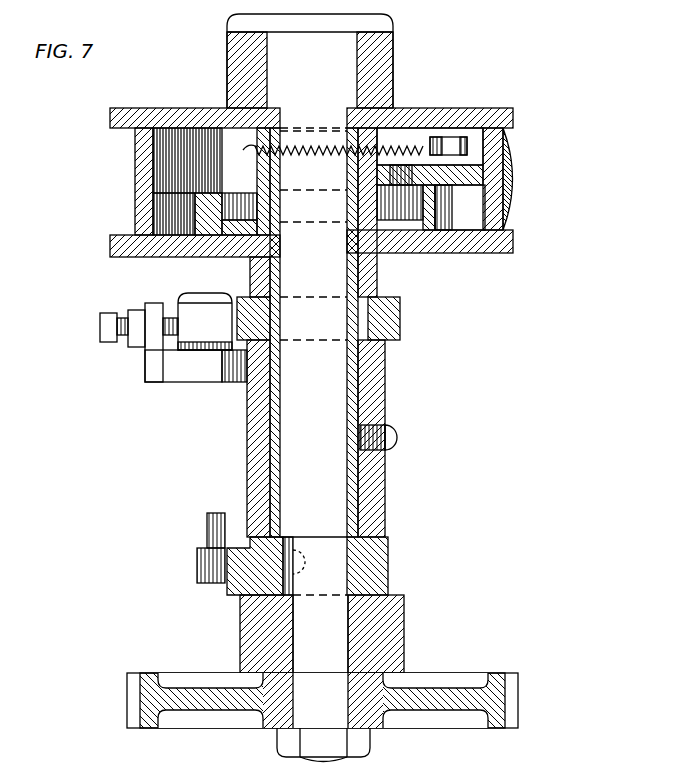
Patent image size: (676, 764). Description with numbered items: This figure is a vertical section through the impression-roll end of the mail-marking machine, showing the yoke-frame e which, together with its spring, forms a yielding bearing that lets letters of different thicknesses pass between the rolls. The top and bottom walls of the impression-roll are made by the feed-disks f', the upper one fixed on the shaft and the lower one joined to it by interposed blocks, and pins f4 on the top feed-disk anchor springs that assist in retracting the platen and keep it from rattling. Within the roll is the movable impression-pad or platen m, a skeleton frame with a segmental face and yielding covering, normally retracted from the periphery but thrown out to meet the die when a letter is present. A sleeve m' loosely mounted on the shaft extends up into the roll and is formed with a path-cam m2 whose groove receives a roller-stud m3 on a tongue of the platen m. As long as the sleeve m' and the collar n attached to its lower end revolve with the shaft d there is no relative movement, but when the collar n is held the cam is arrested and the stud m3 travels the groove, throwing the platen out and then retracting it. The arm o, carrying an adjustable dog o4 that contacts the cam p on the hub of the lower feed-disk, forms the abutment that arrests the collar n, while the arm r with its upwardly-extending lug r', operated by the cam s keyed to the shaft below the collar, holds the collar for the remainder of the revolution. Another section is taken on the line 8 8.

The yoke-frame e is at (393, 57).
The feed-disks f' is at (160, 182).
The pins f4 is at (327, 170).
The section line 8 8 is at (257, 131).
The impression-pad or platen m is at (462, 180).
The path-cam m2 is at (203, 217).
The roller-stud m3 is at (412, 218).
The sleeve m' is at (398, 332).
The cam p is at (405, 322).
The arm o is at (170, 372).
The adjustable dog o4 is at (205, 326).
The shaft d is at (307, 452).
The collar or sleeve n is at (380, 492).
The lug or abutment r' is at (192, 530).
The arm r is at (187, 567).
The cam s is at (385, 562).